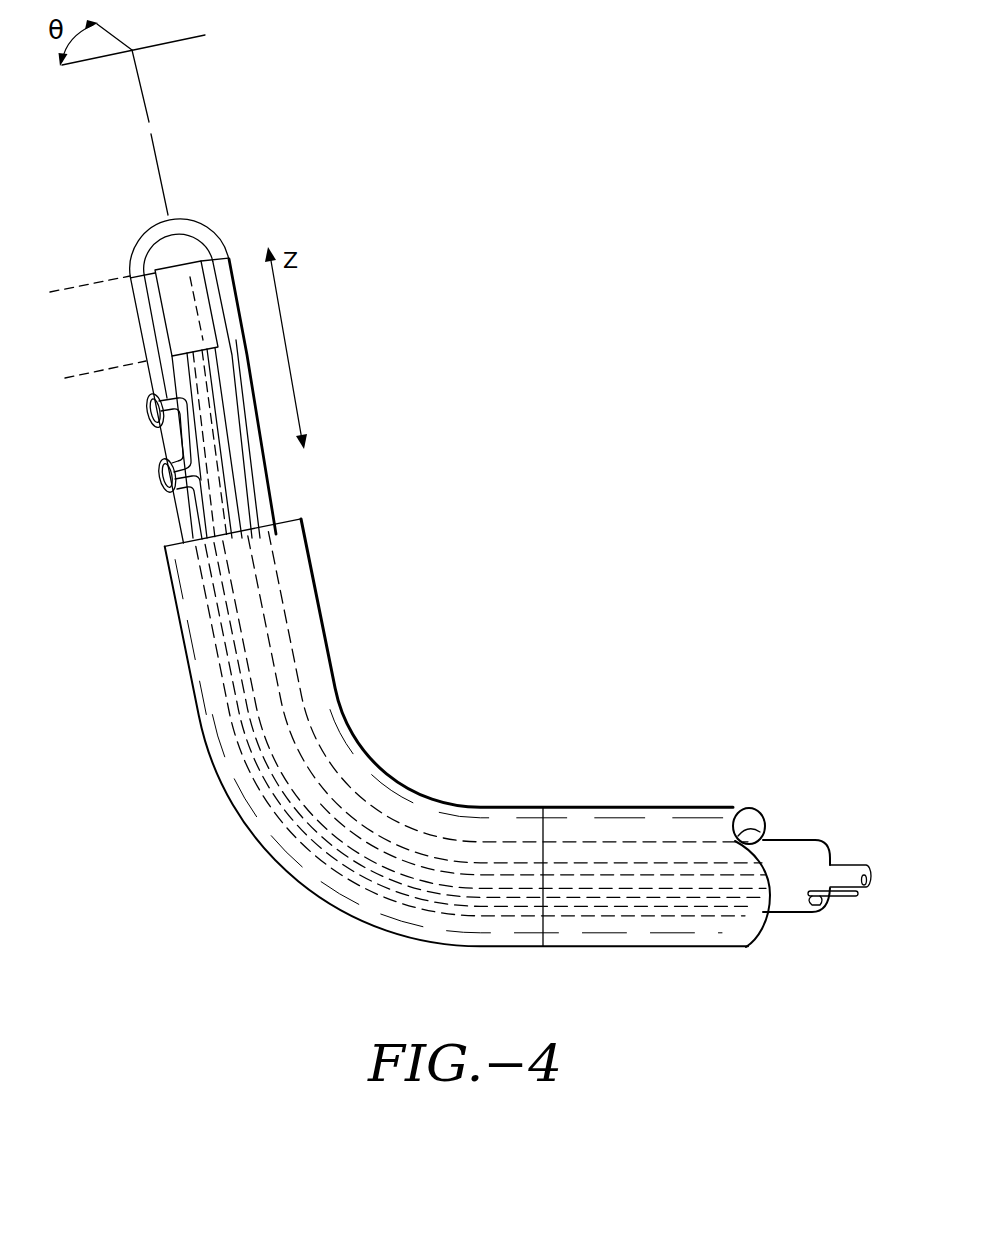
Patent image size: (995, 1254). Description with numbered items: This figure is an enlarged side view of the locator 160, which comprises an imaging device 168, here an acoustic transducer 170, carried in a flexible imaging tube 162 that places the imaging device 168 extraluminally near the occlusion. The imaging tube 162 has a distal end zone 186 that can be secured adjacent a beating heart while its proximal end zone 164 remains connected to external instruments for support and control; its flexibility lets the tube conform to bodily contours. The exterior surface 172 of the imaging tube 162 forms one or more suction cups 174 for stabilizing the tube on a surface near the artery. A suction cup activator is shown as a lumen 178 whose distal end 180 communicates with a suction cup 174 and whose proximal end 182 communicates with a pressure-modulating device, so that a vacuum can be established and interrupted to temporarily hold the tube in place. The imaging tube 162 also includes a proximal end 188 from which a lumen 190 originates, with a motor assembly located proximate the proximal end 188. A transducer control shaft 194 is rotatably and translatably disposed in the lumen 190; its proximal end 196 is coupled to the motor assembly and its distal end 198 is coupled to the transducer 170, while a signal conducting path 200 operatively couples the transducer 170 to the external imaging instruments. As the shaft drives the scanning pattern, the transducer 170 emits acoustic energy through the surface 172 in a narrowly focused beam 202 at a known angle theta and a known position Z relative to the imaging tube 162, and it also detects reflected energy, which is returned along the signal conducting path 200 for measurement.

The locator 160 is at (262, 846).
The imaging tube 162 is at (193, 218).
The proximal end zone 164 is at (710, 947).
The imaging device 168 is at (218, 342).
The acoustic transducer 170 is at (228, 266).
The exterior surface 172 is at (237, 294).
The suction cup 174 is at (160, 478).
The lumen 178 is at (183, 443).
The distal end 180 is at (147, 412).
The proximal end 182 is at (855, 898).
The distal end zone 186 is at (190, 660).
The proximal end 188 is at (763, 808).
The lumen 190 is at (230, 394).
The transducer control shaft 194 is at (238, 488).
The proximal end 196 is at (866, 866).
The distal end 198 is at (234, 352).
The signal conducting path 200 is at (218, 447).
The focused beam 202 is at (74, 284).